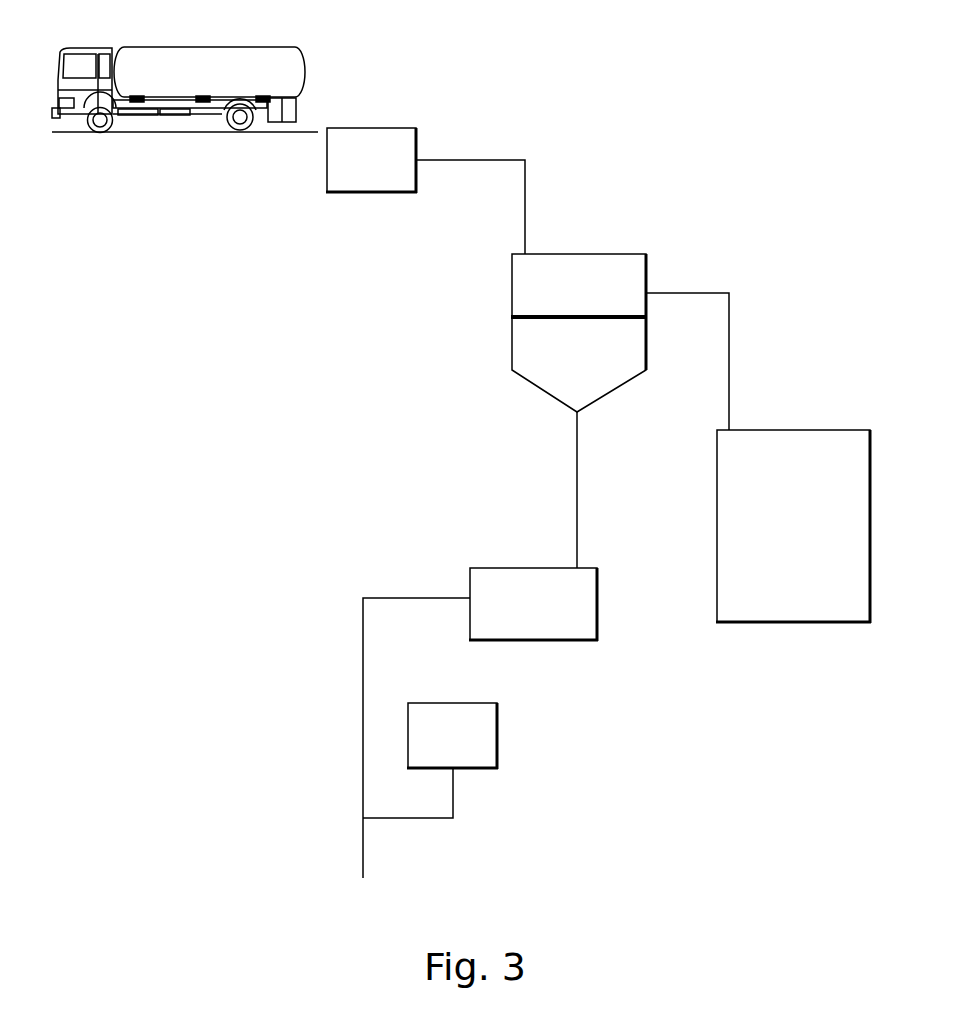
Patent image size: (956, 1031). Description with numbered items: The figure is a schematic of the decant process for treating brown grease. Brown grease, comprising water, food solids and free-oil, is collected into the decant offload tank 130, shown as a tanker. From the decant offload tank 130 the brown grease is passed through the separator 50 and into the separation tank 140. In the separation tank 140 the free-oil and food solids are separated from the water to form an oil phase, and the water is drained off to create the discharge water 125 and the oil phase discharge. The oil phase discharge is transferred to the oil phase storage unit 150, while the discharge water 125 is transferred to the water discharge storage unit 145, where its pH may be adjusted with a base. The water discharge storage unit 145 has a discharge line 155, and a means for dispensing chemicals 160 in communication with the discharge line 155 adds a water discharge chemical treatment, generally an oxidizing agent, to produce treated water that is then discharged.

The decant offload tank 130 is at (340, 100).
The separator 50 is at (425, 191).
The separation tank 140 is at (500, 290).
The discharge water 125 is at (579, 442).
The oil phase storage unit 150 is at (793, 526).
The water discharge storage unit 145 is at (533, 604).
The discharge line 155 is at (363, 637).
The means for dispensing chemicals 160 is at (452, 736).